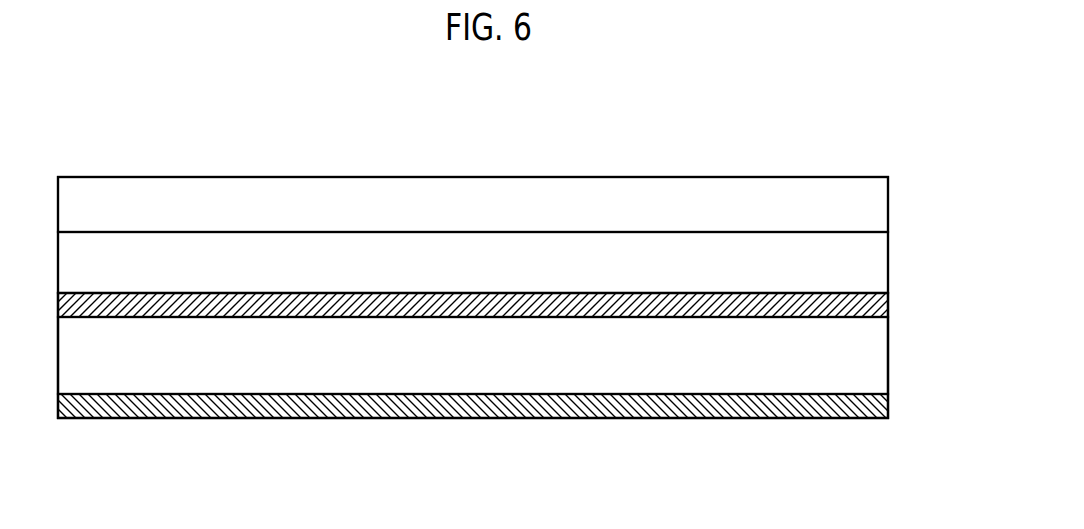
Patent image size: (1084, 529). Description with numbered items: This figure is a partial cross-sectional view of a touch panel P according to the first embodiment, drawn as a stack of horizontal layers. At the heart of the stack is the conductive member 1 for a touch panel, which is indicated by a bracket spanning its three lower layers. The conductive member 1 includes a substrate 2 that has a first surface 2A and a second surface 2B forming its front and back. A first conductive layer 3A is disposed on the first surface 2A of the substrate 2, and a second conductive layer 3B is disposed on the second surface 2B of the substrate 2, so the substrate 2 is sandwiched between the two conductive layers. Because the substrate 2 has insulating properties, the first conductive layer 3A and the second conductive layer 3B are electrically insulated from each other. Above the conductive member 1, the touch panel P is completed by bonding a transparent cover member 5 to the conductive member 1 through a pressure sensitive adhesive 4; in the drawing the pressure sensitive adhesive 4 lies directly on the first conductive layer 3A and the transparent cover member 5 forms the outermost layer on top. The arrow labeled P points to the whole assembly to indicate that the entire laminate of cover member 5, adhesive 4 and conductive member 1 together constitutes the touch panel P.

The conductive member for a touch panel 1 is at (902, 293).
The substrate 2 is at (252, 358).
The first surface 2A is at (187, 317).
The second surface 2B is at (340, 395).
The first conductive layer 3A is at (440, 308).
The second conductive layer 3B is at (538, 401).
The pressure sensitive adhesive 4 is at (291, 262).
The transparent cover member 5 is at (423, 205).
The touch panel P is at (798, 120).